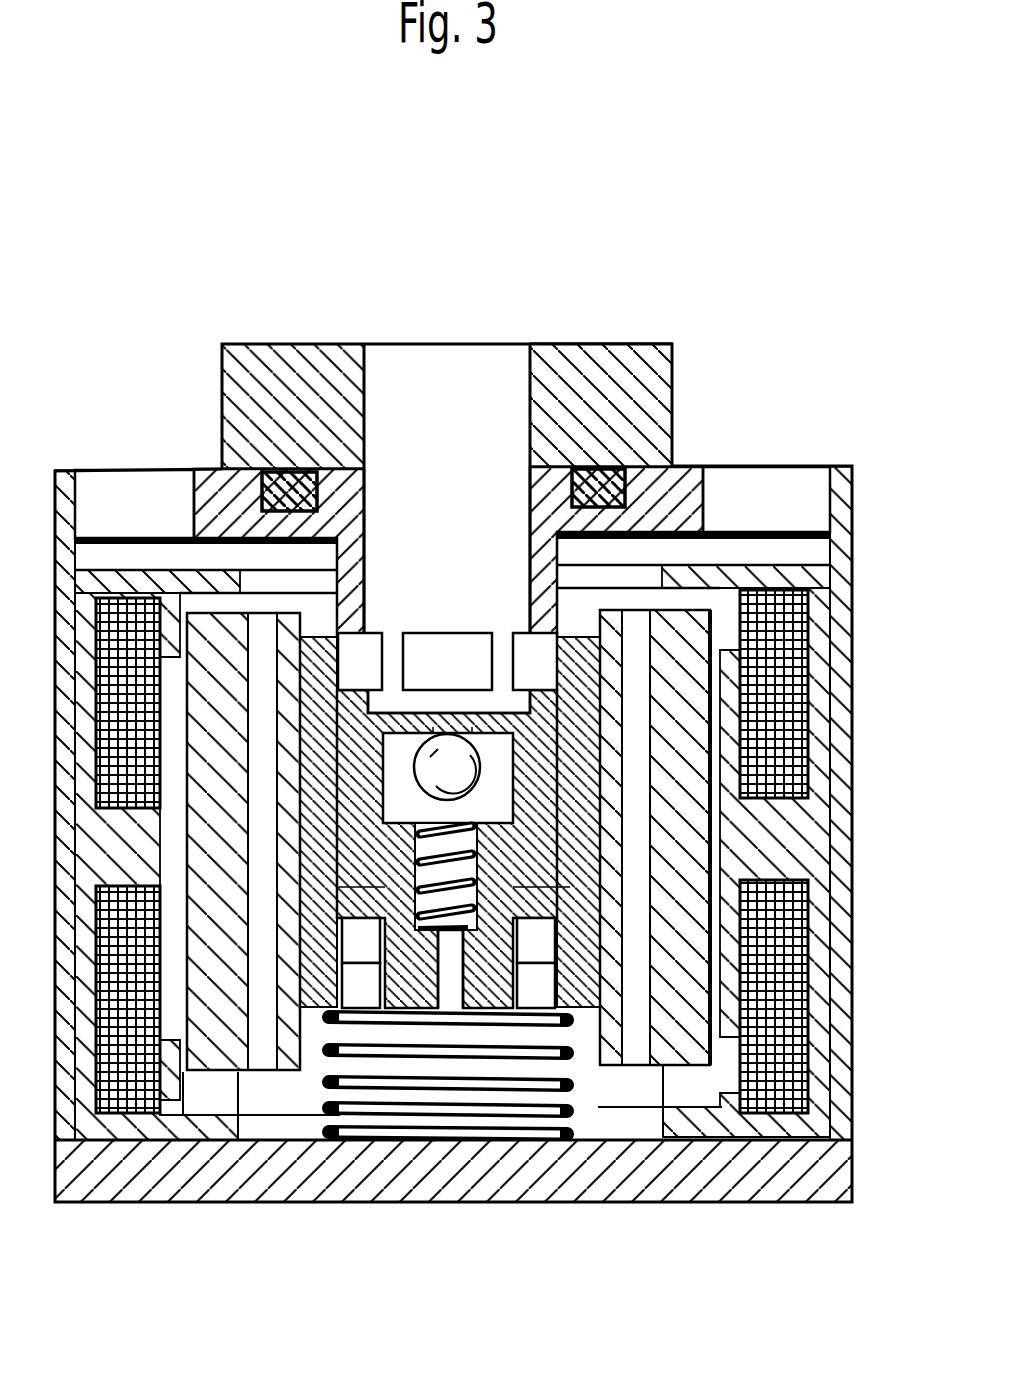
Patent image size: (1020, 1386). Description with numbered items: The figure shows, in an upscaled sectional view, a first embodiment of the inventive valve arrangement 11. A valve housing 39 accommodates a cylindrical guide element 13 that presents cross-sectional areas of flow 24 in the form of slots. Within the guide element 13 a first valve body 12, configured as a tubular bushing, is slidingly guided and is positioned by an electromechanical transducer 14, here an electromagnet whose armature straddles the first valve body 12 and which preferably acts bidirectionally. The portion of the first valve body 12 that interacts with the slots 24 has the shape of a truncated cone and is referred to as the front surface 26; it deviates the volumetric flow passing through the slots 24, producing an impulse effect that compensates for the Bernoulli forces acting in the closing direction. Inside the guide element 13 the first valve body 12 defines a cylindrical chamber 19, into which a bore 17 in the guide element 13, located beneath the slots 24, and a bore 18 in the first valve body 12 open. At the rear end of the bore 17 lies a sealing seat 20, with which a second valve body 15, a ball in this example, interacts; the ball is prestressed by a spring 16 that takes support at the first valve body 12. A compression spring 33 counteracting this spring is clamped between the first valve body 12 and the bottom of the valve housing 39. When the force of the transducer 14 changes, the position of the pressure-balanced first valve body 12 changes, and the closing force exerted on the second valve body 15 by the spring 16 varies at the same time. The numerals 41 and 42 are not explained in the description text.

The valve arrangement 11 is at (852, 497).
The first valve body 12 is at (583, 988).
The cylindrical guide element 13 is at (537, 893).
The electromechanical transducer 14 is at (787, 838).
The second valve body 15 is at (425, 770).
The spring 16 is at (405, 887).
The bore 17 is at (433, 727).
The bore 18 is at (440, 1002).
The cylindrical chamber 19 is at (490, 792).
The sealing seat 20 is at (472, 727).
The cross-sectional areas of flow 24 is at (517, 630).
The front surface 26 is at (377, 630).
The compression spring 33 is at (524, 1110).
The valve housing 39 is at (170, 1158).
The connection bore 41 is at (434, 388).
The annular chamber 42 is at (122, 490).